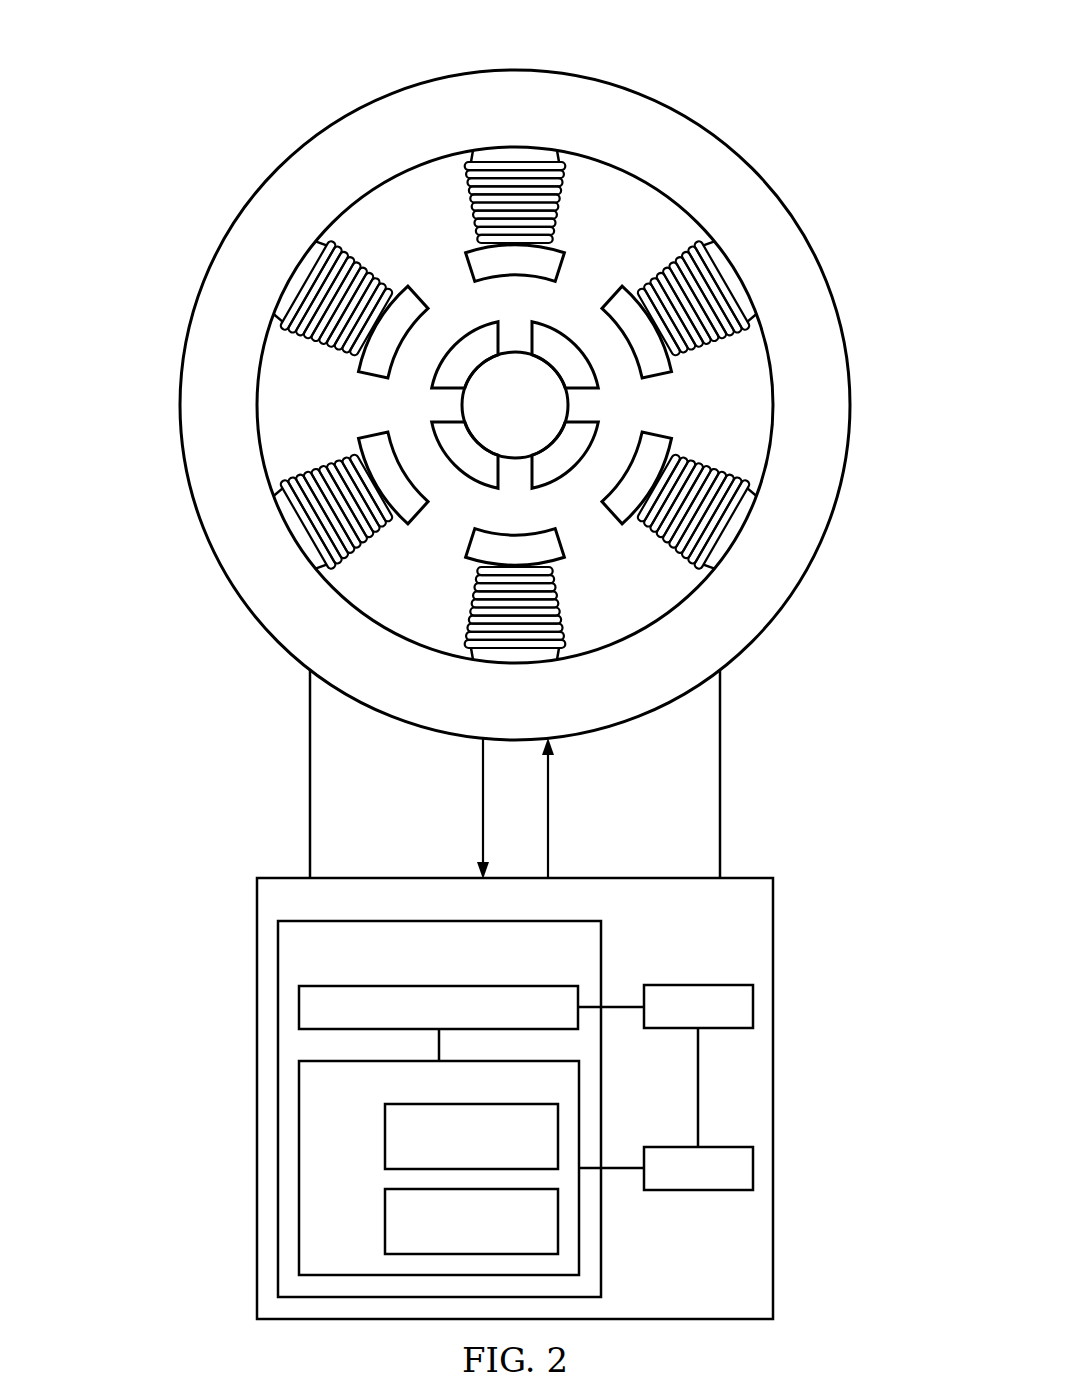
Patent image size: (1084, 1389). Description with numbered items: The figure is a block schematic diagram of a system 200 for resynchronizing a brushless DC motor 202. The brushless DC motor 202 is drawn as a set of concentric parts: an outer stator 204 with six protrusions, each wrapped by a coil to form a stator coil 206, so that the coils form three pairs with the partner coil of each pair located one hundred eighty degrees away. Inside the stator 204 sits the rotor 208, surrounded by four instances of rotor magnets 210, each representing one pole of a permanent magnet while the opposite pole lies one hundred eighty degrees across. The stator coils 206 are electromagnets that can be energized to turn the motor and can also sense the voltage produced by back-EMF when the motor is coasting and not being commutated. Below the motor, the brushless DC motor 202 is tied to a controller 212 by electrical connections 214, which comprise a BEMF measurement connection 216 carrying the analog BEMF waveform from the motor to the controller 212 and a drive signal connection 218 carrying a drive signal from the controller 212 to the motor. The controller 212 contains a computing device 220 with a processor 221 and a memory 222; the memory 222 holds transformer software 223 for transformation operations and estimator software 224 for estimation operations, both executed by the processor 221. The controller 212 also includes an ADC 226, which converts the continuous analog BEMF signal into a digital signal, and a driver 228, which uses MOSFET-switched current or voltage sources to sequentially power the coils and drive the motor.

The system 200 is at (208, 55).
The brushless DC motor 202 is at (674, 102).
The stator 204 is at (178, 404).
The stator coils 206 is at (740, 350).
The rotor 208 is at (495, 435).
The rotor magnets 210 is at (478, 323).
The controller 212 is at (782, 1047).
The electrical connections 214 is at (732, 768).
The BEMF measurement connection 216 is at (452, 852).
The drive signal connection 218 is at (578, 848).
The computing device 220 is at (610, 961).
The processor 221 is at (351, 985).
The memory 222 is at (322, 1100).
The transformer software 223 is at (385, 1137).
The estimator software 224 is at (385, 1222).
The ADC 226 is at (718, 1028).
The driver 228 is at (710, 1190).